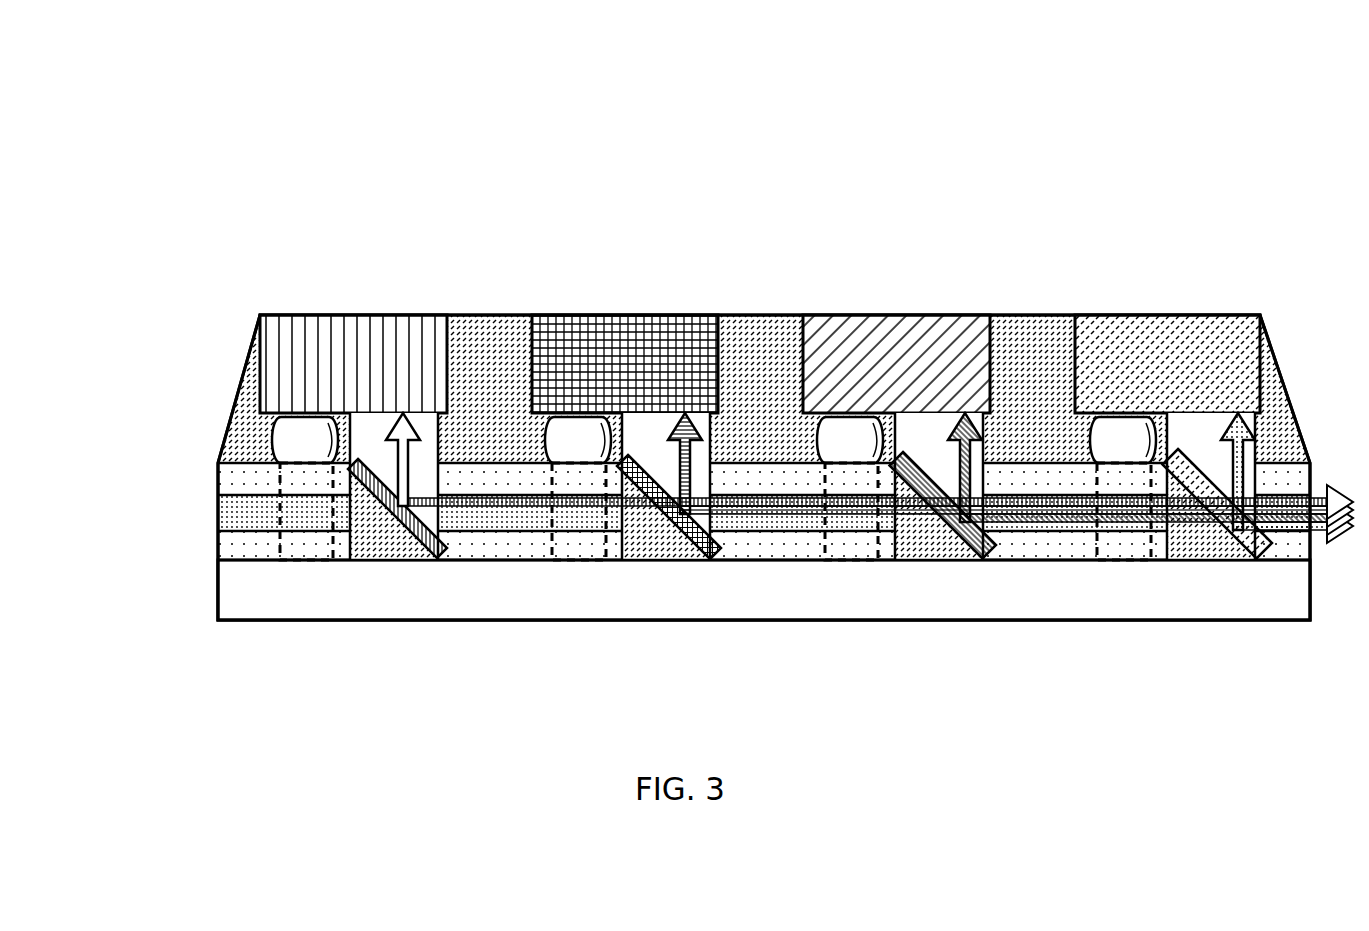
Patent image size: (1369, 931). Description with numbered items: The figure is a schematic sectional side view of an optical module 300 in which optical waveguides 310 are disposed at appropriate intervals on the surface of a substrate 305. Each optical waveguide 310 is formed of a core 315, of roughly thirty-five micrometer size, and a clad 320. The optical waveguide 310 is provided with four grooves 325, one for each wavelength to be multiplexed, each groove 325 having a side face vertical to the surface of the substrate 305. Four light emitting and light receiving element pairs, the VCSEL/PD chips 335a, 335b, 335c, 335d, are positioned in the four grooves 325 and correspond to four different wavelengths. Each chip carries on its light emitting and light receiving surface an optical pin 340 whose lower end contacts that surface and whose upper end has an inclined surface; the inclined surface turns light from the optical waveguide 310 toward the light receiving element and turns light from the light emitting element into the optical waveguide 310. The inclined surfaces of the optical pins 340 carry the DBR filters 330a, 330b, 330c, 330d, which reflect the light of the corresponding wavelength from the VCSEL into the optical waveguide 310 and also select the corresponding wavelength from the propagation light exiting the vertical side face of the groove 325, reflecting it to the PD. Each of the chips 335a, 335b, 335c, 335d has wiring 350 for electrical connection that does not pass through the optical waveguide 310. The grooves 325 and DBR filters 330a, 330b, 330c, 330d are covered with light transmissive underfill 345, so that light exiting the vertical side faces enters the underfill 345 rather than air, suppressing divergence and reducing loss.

The optical module 300 is at (1250, 152).
The substrate 305 is at (232, 592).
The optical waveguide 310 is at (674, 512).
The core 315 is at (222, 512).
The clad 320 is at (220, 478).
The groove 325 is at (443, 570).
The DBR filter 330a is at (426, 562).
The DBR filter 330b is at (698, 562).
The DBR filter 330c is at (971, 562).
The DBR filter 330d is at (1238, 562).
The VCSEL/PD chip 335a is at (358, 333).
The VCSEL/PD chip 335b is at (641, 333).
The VCSEL/PD chip 335c is at (903, 333).
The VCSEL/PD chip 335d is at (1170, 333).
The optical pin 340 is at (428, 452).
The underfill 345 is at (240, 402).
The wiring 350 is at (280, 548).